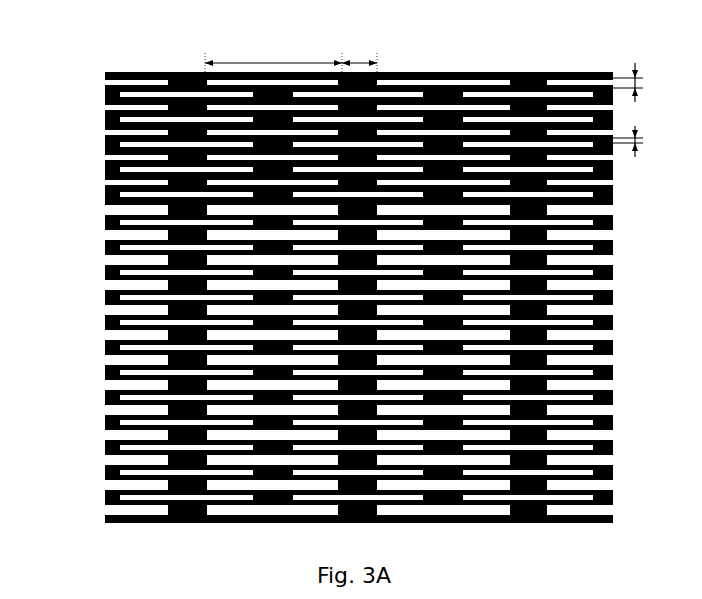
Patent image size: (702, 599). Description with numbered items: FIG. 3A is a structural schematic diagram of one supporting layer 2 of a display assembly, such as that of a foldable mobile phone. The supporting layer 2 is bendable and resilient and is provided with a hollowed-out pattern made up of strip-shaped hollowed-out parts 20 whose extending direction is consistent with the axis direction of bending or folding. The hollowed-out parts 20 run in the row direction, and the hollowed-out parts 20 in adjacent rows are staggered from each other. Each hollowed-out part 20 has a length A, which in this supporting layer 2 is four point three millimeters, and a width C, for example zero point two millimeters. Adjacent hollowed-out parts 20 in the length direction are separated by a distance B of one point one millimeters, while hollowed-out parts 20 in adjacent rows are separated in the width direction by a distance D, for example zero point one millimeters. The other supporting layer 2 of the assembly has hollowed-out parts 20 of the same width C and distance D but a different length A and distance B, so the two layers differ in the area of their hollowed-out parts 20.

The supporting layer 2 is at (316, 269).
The hollowed-out part 20 is at (458, 82).
The length A is at (273, 56).
The distance between adjacent hollowed-out parts in the length direction B is at (359, 56).
The width C is at (631, 82).
The distance between hollowed-out parts in adjacent rows in the width direction D is at (628, 141).